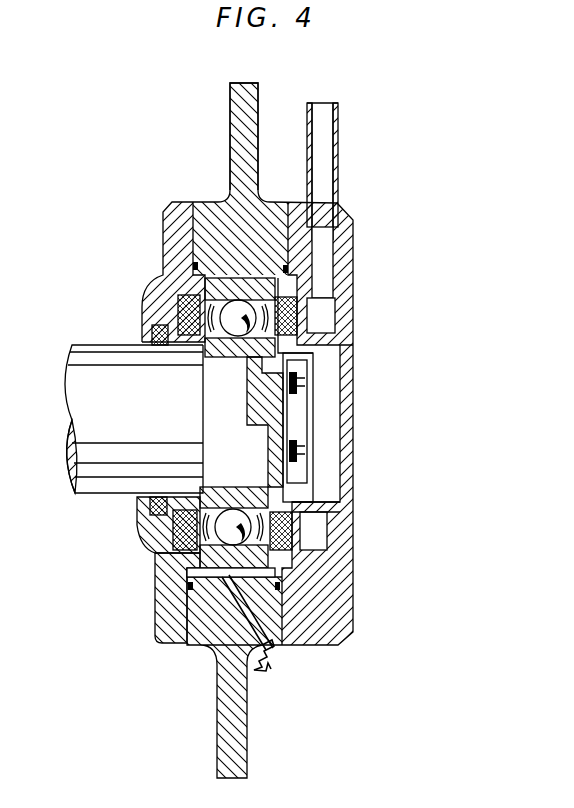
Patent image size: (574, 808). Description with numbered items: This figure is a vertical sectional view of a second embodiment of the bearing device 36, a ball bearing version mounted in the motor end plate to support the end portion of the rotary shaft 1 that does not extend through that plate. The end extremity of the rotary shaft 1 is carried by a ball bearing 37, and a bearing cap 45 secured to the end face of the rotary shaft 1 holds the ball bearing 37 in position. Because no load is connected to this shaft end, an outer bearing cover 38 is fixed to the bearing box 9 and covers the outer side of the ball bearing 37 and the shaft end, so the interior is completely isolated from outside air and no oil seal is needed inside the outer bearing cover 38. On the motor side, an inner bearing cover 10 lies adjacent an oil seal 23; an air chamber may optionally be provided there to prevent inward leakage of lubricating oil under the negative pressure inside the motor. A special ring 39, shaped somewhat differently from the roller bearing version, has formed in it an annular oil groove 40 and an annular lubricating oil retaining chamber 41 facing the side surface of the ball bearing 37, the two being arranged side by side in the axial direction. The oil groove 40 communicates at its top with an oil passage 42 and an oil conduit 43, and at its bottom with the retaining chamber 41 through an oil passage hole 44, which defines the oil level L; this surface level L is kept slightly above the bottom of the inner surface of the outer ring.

The rotary shaft 1 is at (75, 405).
The bearing box 9 is at (210, 205).
The inner bearing cover 10 is at (165, 225).
The oil seal 23 is at (155, 340).
The bearing device 36 is at (482, 438).
The ball bearing 37 is at (235, 330).
The outer bearing cover 38 is at (335, 613).
The special ring 39 is at (320, 505).
The annular oil groove 40 is at (322, 326).
The annular lubricating oil retaining chamber 41 is at (302, 303).
The oil passage 42 is at (320, 252).
The oil conduit 43 is at (335, 146).
The oil passage hole 44 is at (300, 550).
The bearing cap 45 is at (280, 410).
The surface level of lubricating oil L is at (157, 548).